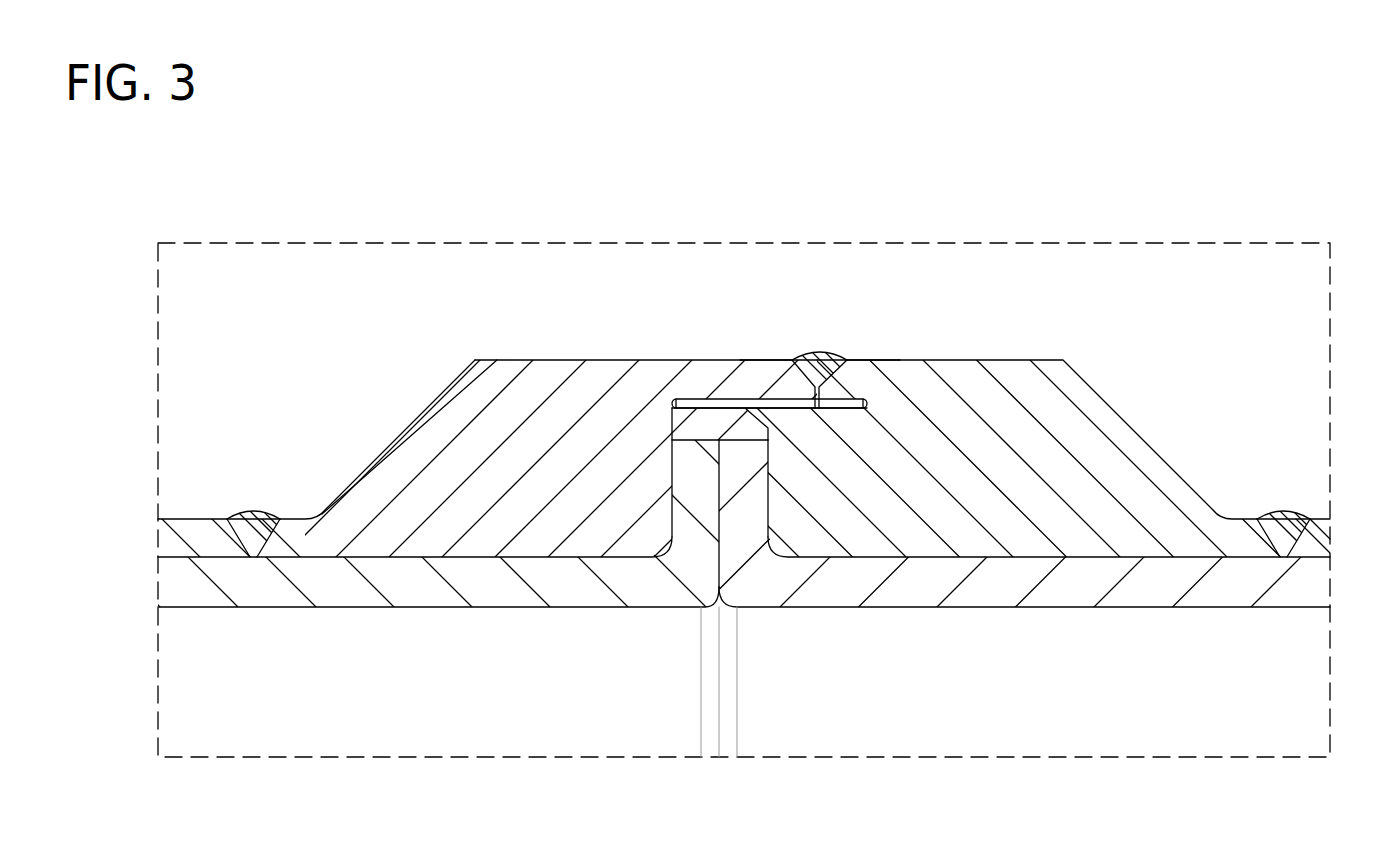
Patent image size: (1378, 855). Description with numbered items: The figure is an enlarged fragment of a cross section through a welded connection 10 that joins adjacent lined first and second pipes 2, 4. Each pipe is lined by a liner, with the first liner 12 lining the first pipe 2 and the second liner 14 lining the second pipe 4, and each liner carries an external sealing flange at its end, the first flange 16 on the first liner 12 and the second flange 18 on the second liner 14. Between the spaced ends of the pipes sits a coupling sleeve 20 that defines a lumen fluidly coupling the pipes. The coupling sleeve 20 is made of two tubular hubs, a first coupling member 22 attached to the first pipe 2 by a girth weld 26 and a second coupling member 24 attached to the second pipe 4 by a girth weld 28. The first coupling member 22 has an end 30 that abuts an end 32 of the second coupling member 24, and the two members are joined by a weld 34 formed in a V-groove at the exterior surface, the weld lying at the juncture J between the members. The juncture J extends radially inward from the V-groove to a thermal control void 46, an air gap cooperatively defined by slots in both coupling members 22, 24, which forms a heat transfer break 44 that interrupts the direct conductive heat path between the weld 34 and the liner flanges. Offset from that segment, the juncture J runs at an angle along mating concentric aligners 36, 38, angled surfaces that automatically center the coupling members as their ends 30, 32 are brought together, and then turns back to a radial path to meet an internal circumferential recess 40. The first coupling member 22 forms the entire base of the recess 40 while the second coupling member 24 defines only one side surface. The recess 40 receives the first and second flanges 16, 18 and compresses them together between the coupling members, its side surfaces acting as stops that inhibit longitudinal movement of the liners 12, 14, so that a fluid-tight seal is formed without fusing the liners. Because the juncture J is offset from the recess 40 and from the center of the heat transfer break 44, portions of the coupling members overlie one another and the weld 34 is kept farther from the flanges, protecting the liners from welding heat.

The first pipe 2 is at (183, 528).
The second pipe 4 is at (1320, 538).
The welded connection 10 is at (1037, 262).
The first liner 12 is at (403, 582).
The second liner 14 is at (1015, 592).
The first flange 16 is at (680, 478).
The second flange 18 is at (757, 482).
The coupling sleeve 20 is at (415, 370).
The first coupling member 22 is at (541, 378).
The second coupling member 24 is at (1013, 370).
The weld 26 is at (247, 517).
The weld 28 is at (1282, 513).
The end of first coupling member 30 is at (774, 347).
The end of second coupling member 32 is at (874, 347).
The weld 34 is at (818, 353).
The concentric aligner 36 is at (753, 409).
The concentric aligner 38 is at (767, 409).
The recess 40 is at (770, 517).
The heat transfer break 44 is at (676, 370).
The thermal control void 46 is at (715, 404).
The juncture J is at (852, 373).